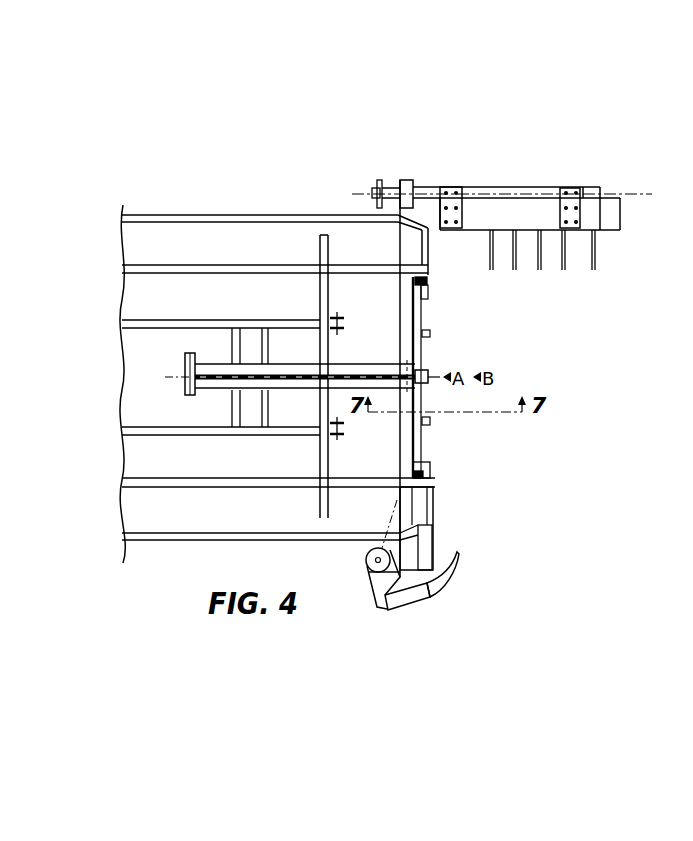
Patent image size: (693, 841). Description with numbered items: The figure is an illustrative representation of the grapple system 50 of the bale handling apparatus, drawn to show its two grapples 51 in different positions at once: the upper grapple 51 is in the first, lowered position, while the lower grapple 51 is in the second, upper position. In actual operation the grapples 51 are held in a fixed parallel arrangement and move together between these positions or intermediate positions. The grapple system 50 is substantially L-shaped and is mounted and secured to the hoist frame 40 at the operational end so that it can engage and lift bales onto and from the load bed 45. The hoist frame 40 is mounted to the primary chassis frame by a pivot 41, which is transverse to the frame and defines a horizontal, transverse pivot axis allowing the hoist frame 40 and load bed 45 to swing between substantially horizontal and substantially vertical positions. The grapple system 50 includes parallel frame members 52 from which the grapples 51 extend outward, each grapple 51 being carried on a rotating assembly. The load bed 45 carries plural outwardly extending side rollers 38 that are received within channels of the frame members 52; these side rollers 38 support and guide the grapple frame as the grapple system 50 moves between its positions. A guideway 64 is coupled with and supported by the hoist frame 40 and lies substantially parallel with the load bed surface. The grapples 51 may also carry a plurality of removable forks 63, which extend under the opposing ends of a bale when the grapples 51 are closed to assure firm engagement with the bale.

The side rollers 38 is at (430, 281).
The hoist frame 40 is at (277, 430).
The pivot 41 is at (340, 428).
The load bed 45 is at (200, 214).
The grapple system 50 is at (424, 358).
The grapples 51 is at (507, 192).
The frame members 52 is at (428, 290).
The forks 63 is at (538, 248).
The guideway 64 is at (215, 383).